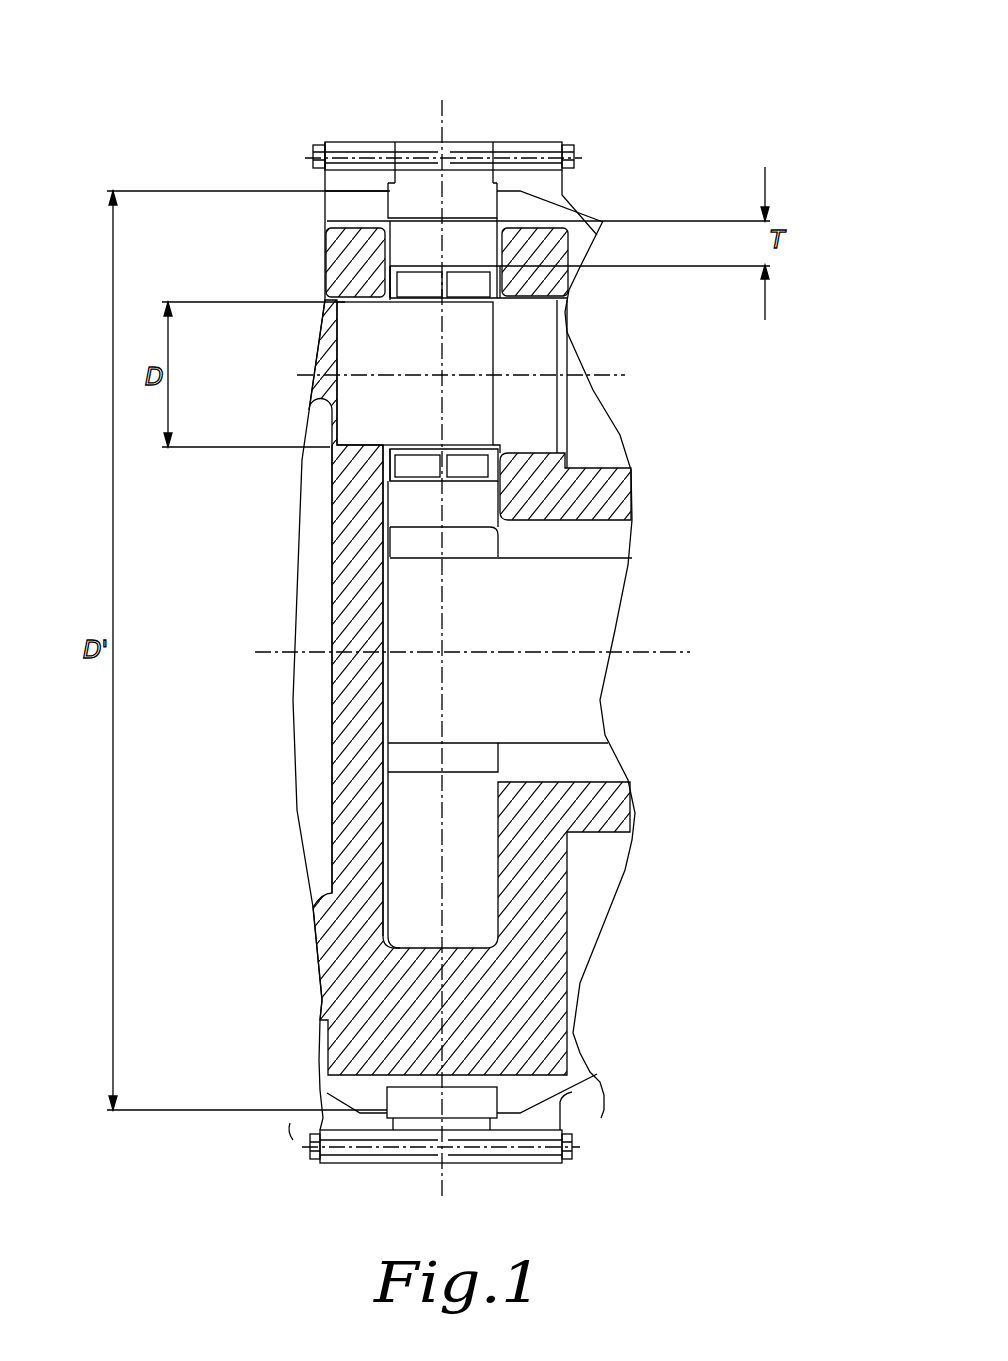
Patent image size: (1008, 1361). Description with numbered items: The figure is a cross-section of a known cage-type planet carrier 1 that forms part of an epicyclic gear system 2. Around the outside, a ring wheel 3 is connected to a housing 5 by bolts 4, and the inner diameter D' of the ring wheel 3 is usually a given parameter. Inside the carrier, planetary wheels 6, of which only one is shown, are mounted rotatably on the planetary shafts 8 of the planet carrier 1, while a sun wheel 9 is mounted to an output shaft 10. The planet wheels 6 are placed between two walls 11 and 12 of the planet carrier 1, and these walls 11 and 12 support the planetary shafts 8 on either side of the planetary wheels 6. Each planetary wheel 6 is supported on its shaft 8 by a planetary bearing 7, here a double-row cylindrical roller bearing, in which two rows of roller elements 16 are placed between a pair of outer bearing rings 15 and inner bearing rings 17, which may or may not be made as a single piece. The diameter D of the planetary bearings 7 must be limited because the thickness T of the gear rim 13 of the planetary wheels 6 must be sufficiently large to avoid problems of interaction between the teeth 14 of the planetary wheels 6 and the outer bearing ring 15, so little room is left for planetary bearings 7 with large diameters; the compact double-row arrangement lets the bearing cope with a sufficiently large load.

The planet carrier 1 is at (357, 803).
The epicyclic gear system 2 is at (790, 147).
The ring wheel 3 is at (443, 180).
The bolts 4 is at (567, 143).
The housing 5 is at (561, 195).
The planetary wheels 6 is at (352, 211).
The planetary bearings 7 is at (463, 283).
The planetary shafts 8 is at (362, 347).
The sun wheel 9 is at (462, 538).
The output shaft 10 is at (560, 613).
The wall 11 is at (378, 544).
The wall 12 is at (513, 476).
The gear rim 13 is at (423, 243).
The teeth 14 is at (462, 207).
The outer bearing ring 15 is at (463, 270).
The roller elements 16 is at (457, 292).
The inner bearing rings 17 is at (412, 298).